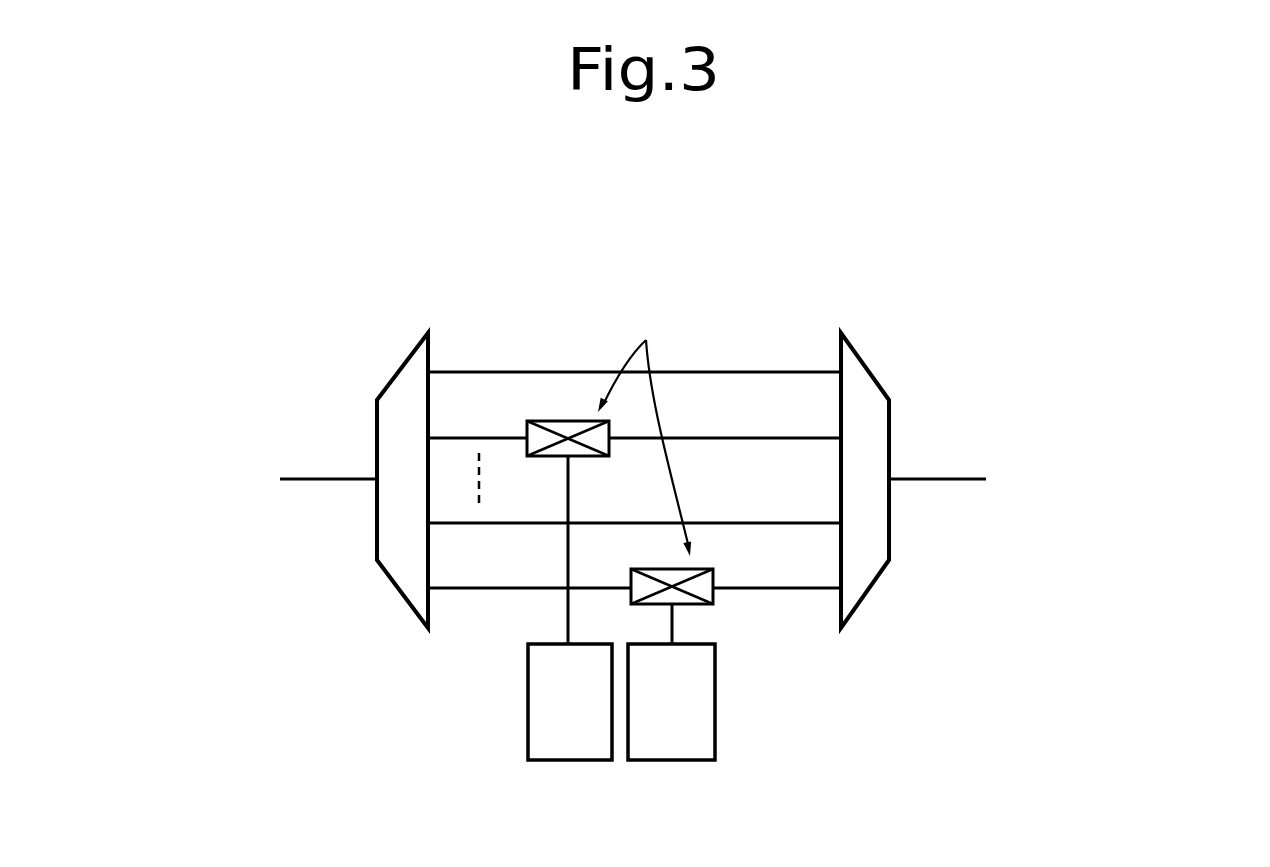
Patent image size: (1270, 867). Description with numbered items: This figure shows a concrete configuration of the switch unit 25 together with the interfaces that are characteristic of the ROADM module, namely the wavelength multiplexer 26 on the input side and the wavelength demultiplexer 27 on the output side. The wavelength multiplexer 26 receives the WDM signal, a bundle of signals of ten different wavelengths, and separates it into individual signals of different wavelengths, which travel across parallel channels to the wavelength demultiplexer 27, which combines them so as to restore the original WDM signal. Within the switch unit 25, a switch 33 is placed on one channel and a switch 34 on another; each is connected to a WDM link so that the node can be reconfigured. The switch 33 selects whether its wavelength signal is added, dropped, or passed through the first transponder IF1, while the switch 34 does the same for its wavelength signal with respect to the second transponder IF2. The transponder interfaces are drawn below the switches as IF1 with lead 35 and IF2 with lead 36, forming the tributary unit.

The switch unit 25 is at (725, 213).
The wavelength multiplexer 26 is at (386, 383).
The wavelength demultiplexer 27 is at (872, 374).
The switch 33 is at (587, 457).
The switch 34 is at (702, 605).
The interface IF1 of tributary unit 35 is at (568, 762).
The interface IF2 of tributary unit 36 is at (672, 762).